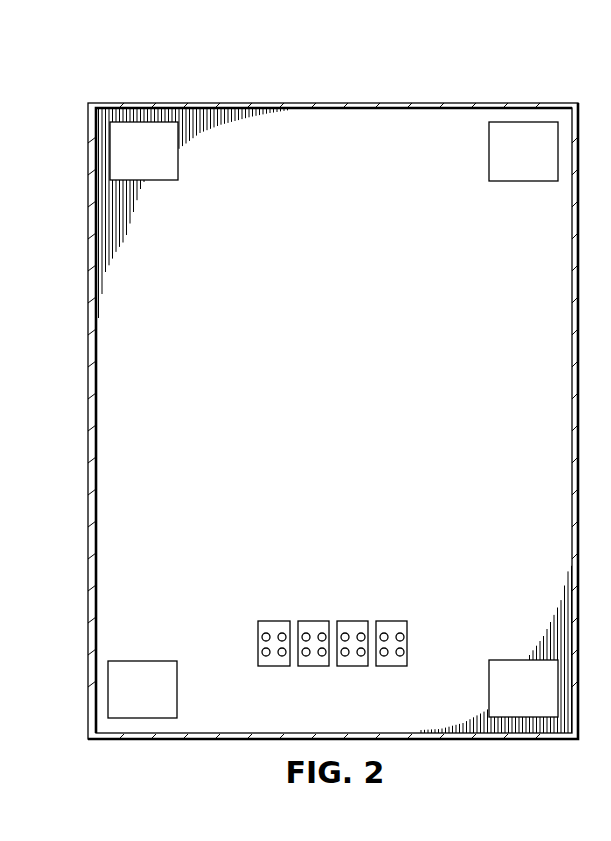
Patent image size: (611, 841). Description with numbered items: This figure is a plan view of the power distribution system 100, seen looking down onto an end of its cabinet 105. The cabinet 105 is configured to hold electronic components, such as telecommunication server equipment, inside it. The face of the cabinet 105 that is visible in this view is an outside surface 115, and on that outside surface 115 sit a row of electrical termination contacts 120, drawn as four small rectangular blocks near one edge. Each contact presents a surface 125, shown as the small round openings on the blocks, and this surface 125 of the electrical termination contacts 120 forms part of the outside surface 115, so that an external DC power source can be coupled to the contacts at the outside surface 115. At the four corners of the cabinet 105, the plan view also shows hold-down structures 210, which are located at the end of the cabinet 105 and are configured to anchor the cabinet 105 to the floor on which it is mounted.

The power distribution system 100 is at (226, 76).
The cabinet 105 is at (82, 274).
The outside surface 115 is at (352, 415).
The electrical termination contacts 120 is at (275, 667).
The surface 125 is at (275, 627).
The hold-down structures 210 is at (125, 163).